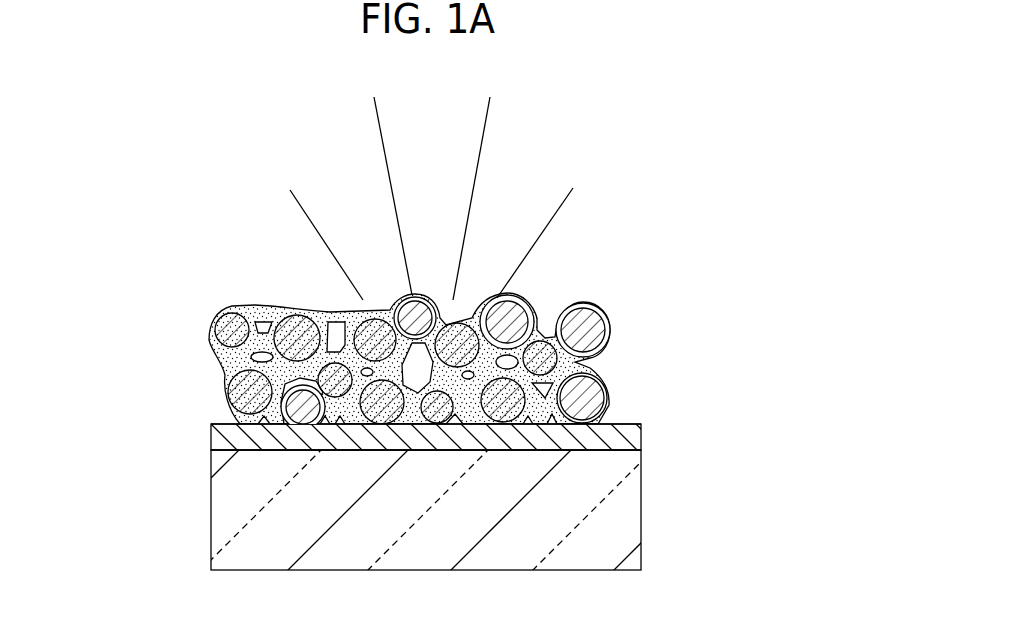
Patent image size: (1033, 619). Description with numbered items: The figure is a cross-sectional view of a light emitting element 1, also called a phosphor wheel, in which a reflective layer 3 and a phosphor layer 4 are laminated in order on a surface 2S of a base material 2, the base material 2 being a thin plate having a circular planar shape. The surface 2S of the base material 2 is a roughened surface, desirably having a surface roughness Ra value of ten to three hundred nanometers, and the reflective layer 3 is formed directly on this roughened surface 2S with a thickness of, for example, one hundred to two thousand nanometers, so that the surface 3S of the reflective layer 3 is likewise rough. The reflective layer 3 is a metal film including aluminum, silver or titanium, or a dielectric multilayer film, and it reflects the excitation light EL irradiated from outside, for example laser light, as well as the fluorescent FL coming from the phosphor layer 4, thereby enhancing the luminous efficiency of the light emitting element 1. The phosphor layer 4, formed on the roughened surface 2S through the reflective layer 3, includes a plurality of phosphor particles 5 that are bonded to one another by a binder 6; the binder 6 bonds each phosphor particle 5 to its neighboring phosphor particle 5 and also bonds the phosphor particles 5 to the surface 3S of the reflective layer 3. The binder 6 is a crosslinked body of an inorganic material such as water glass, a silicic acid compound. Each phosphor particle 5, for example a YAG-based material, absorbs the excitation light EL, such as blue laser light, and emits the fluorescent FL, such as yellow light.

The light emitting element 1 is at (658, 114).
The base material 2 is at (615, 508).
The surface of base material 2S is at (223, 423).
The reflective layer 3 is at (615, 438).
The surface of reflective layer 3S is at (632, 422).
The phosphor layer 4 is at (658, 290).
The phosphor particle 5 is at (587, 320).
The binder 6 is at (277, 317).
The excitation light EL is at (450, 122).
The fluorescent FL is at (537, 183).